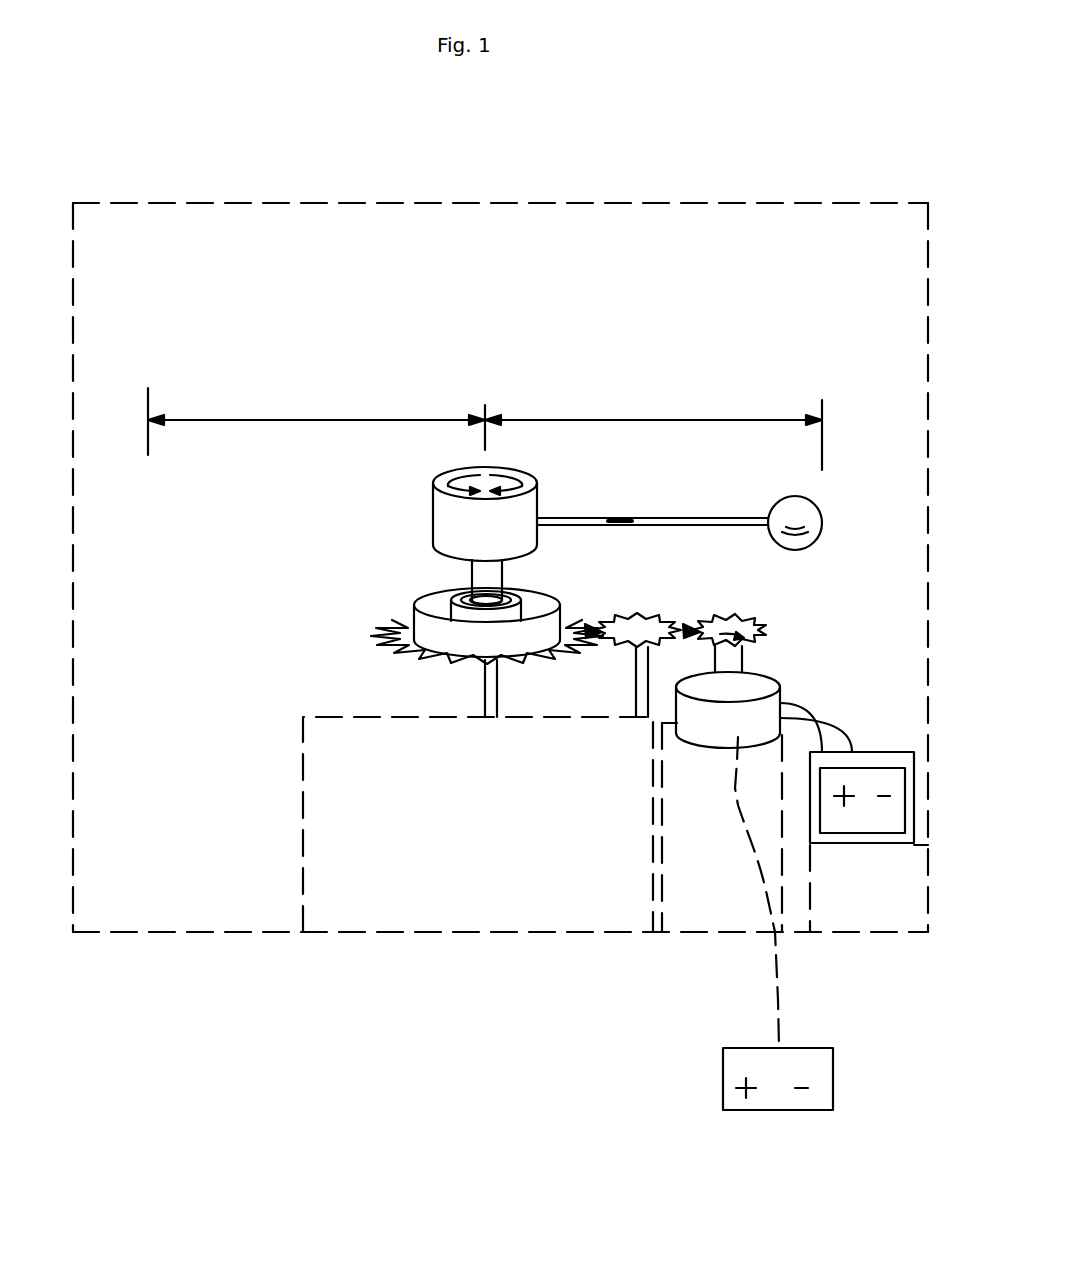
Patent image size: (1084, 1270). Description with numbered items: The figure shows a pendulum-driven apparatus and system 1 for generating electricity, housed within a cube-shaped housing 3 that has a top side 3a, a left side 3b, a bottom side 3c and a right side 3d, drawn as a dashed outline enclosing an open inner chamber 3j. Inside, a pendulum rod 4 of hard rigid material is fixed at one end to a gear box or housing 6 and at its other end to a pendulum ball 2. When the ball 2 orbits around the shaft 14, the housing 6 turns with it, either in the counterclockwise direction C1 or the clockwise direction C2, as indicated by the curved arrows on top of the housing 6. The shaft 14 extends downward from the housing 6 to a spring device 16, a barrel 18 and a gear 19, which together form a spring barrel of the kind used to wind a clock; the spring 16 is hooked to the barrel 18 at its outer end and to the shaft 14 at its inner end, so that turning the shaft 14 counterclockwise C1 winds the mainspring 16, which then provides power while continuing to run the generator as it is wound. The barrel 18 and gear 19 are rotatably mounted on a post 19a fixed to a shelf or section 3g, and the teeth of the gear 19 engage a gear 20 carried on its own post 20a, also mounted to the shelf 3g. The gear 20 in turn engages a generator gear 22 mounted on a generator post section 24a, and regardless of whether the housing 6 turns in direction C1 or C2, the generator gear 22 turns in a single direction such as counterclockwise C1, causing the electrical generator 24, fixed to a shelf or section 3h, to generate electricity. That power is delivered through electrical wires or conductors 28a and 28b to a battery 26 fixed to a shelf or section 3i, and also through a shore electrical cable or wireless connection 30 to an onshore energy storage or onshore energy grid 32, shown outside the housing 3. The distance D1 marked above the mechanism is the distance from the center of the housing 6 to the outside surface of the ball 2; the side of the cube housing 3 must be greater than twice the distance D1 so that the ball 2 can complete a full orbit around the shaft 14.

The apparatus, method and system 1 is at (668, 192).
The pendulum ball 2 is at (808, 513).
The housing 3 is at (500, 578).
The top side 3a is at (323, 200).
The left side 3b is at (76, 775).
The bottom side 3c is at (615, 937).
The right side 3d is at (926, 525).
The shelf or section 3g is at (470, 840).
The shelf or section 3h is at (722, 880).
The shelf or section 3i is at (883, 908).
The inner chamber 3j is at (815, 345).
The pendulum rod 4 is at (690, 520).
The gear box or housing 6 is at (440, 487).
The shaft 14 is at (472, 581).
The spring device 16 is at (448, 638).
The barrel 18 is at (463, 621).
The gear 19 is at (387, 645).
The post 19a is at (490, 705).
The gear 20 is at (632, 627).
The post 20a is at (638, 683).
The generator gear 22 is at (718, 623).
The electrical generator 24 is at (763, 689).
The generator post section 24a is at (732, 660).
The battery 26 is at (873, 750).
The electrical wire or conductor 28a is at (823, 710).
The electrical wire or conductor 28b is at (826, 733).
The shore electrical cable or wireless connection 30 is at (737, 812).
The onshore energy storage or onshore energy grid 32 is at (807, 1065).
The counterclockwise direction C1 is at (448, 482).
The clockwise direction C2 is at (530, 480).
The distance D1 is at (485, 426).